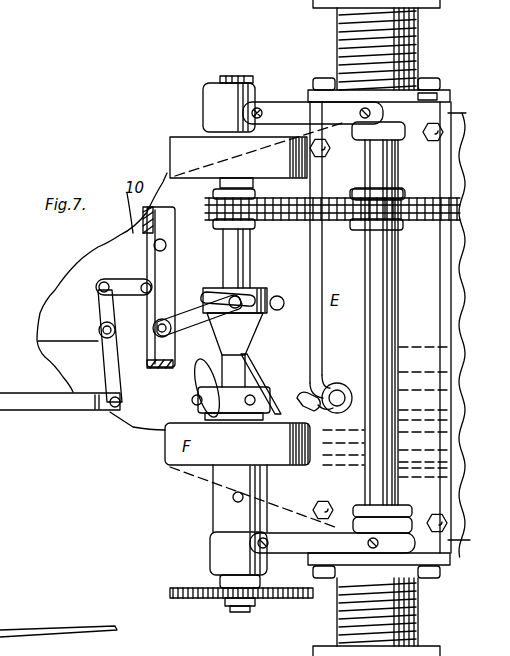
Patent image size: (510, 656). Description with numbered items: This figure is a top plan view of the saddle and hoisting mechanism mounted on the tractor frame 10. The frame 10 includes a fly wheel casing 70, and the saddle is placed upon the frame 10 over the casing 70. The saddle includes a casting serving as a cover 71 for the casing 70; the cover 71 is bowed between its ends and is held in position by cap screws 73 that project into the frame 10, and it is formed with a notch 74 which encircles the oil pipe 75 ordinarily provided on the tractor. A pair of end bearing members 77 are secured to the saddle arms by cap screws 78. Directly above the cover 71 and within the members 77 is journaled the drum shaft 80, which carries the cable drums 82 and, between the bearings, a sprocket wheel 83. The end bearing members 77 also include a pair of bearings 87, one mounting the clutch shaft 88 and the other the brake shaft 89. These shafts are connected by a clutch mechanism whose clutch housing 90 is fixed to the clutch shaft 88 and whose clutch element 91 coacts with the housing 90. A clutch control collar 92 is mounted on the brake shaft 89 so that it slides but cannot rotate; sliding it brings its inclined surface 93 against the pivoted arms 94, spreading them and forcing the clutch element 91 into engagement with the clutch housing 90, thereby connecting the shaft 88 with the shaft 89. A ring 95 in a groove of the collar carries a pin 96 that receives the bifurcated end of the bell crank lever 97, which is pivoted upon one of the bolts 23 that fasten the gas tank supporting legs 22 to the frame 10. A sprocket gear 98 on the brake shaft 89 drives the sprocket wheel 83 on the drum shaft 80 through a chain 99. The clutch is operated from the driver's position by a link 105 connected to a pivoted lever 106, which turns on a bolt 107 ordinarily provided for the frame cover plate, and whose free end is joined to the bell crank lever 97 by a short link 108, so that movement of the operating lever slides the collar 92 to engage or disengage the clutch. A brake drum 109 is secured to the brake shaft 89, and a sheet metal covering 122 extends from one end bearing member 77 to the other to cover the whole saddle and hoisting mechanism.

The frame 10 is at (283, 515).
The supporting legs 22 is at (148, 366).
The bolts 23 is at (163, 252).
The fly wheel casing 70 is at (452, 548).
The cover 71 is at (387, 412).
The cap screws 73 is at (433, 142).
The notch 74 is at (336, 383).
The oil pipe 75 is at (303, 392).
The end bearing members 77 is at (329, 329).
The cap screws 78 is at (326, 78).
The drum shaft 80 is at (390, 297).
The cable drums 82 is at (341, 24).
The sprocket wheel 83 is at (410, 228).
The bearings 87 is at (203, 95).
The clutch shaft 88 is at (235, 613).
The brake shaft 89 is at (233, 77).
The clutch housing 90 is at (280, 467).
The clutch element 91 is at (318, 405).
The clutch control collar 92 is at (263, 290).
The inclined surface 93 is at (258, 340).
The pivoted arms 94 is at (205, 378).
The ring 95 is at (284, 303).
The pin 96 is at (220, 290).
The bell crank lever 97 is at (157, 318).
The sprocket gear 98 is at (203, 213).
The chain 99 is at (325, 225).
The link 105 is at (53, 410).
The pivoted lever 106 is at (105, 352).
The bolt 107 is at (99, 330).
The short link 108 is at (117, 268).
The brake drum 109 is at (257, 155).
The sheet metal covering 122 is at (45, 633).